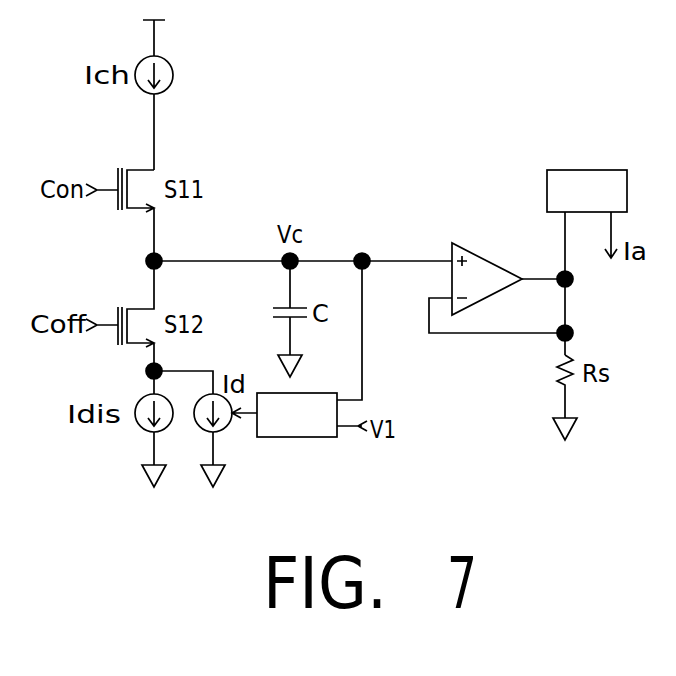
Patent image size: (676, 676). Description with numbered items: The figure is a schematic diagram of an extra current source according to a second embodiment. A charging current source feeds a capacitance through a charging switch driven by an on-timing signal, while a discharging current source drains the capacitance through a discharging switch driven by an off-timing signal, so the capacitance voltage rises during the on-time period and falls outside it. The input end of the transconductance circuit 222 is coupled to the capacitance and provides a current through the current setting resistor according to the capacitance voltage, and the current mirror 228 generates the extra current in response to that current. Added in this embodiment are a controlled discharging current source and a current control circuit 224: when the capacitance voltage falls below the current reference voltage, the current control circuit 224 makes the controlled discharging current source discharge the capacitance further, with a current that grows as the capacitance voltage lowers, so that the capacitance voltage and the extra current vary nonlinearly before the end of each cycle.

The transconductance circuit 222 is at (483, 257).
The current control circuit 224 is at (281, 428).
The current mirror 228 is at (571, 205).